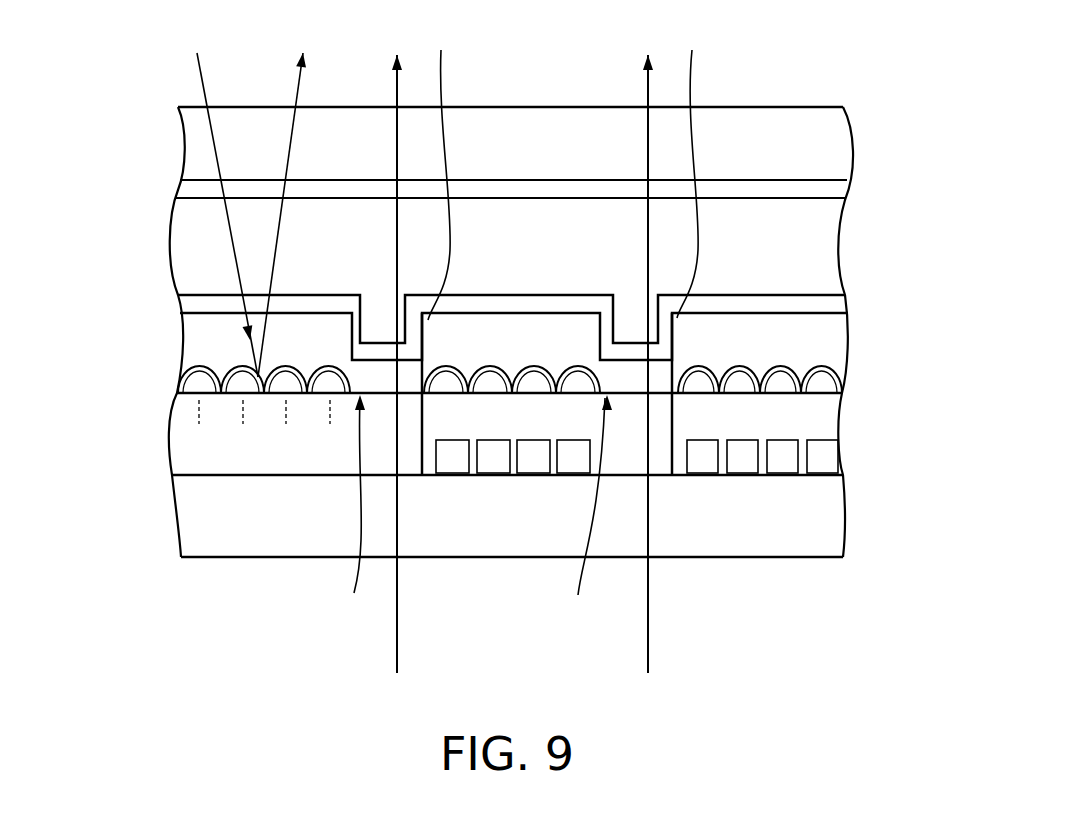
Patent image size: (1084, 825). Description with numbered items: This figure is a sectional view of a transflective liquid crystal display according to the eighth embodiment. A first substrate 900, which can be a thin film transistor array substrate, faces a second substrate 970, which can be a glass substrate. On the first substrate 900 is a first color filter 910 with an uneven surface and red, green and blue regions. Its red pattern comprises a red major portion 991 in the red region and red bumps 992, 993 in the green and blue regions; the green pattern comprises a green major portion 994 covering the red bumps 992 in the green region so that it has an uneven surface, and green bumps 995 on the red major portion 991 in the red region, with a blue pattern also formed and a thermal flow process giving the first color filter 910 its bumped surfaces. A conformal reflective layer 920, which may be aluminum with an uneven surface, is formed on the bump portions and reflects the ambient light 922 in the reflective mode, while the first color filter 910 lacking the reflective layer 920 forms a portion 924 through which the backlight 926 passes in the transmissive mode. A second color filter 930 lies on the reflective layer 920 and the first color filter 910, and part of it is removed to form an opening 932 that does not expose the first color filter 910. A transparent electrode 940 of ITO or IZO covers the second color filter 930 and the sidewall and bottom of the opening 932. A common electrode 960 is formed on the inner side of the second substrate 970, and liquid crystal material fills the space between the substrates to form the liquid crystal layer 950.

The first substrate 900 is at (820, 517).
The first color filter 910 is at (820, 423).
The reflective layer 920 is at (182, 368).
The ambient light 922 is at (195, 80).
The portion 924 is at (435, 345).
The backlight 926 is at (397, 660).
The second color filter 930 is at (835, 337).
The opening 932 is at (574, 166).
The transparent electrode 940 is at (820, 305).
The liquid crystal layer 950 is at (820, 243).
The common electrode 960 is at (818, 188).
The second substrate 970 is at (818, 150).
The red major portion 991 is at (193, 466).
The red bumps 992 is at (448, 478).
The red bumps 993 is at (700, 478).
The green major portion 994 is at (626, 453).
The green bumps 995 is at (170, 395).